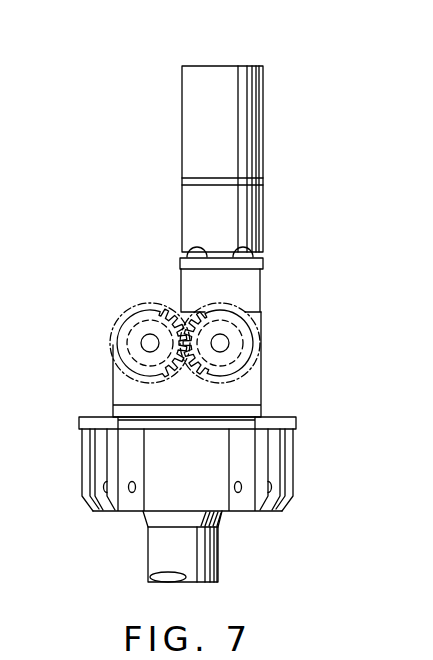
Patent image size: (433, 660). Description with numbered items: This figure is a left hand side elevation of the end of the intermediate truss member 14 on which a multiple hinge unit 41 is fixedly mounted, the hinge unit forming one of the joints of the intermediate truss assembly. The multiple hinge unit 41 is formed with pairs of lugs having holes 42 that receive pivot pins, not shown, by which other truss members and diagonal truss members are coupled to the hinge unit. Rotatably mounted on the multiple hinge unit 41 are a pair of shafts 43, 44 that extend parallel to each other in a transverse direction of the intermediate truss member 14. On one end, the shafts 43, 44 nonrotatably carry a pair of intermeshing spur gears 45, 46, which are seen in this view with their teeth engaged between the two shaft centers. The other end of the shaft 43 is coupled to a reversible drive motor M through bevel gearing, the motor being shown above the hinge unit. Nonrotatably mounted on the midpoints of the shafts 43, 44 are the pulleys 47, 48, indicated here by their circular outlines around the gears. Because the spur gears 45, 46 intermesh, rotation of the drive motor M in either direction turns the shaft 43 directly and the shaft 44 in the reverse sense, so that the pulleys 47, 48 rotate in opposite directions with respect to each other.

The reversible drive motor M is at (185, 126).
The intermediate truss member 14 is at (218, 552).
The multiple hinge unit 41 is at (79, 418).
The holes 42 is at (131, 494).
The shaft 43 is at (222, 343).
The shaft 44 is at (148, 342).
The spur gear 45 is at (203, 313).
The spur gear 46 is at (165, 310).
The pulley 47 is at (238, 358).
The pulley 48 is at (128, 353).